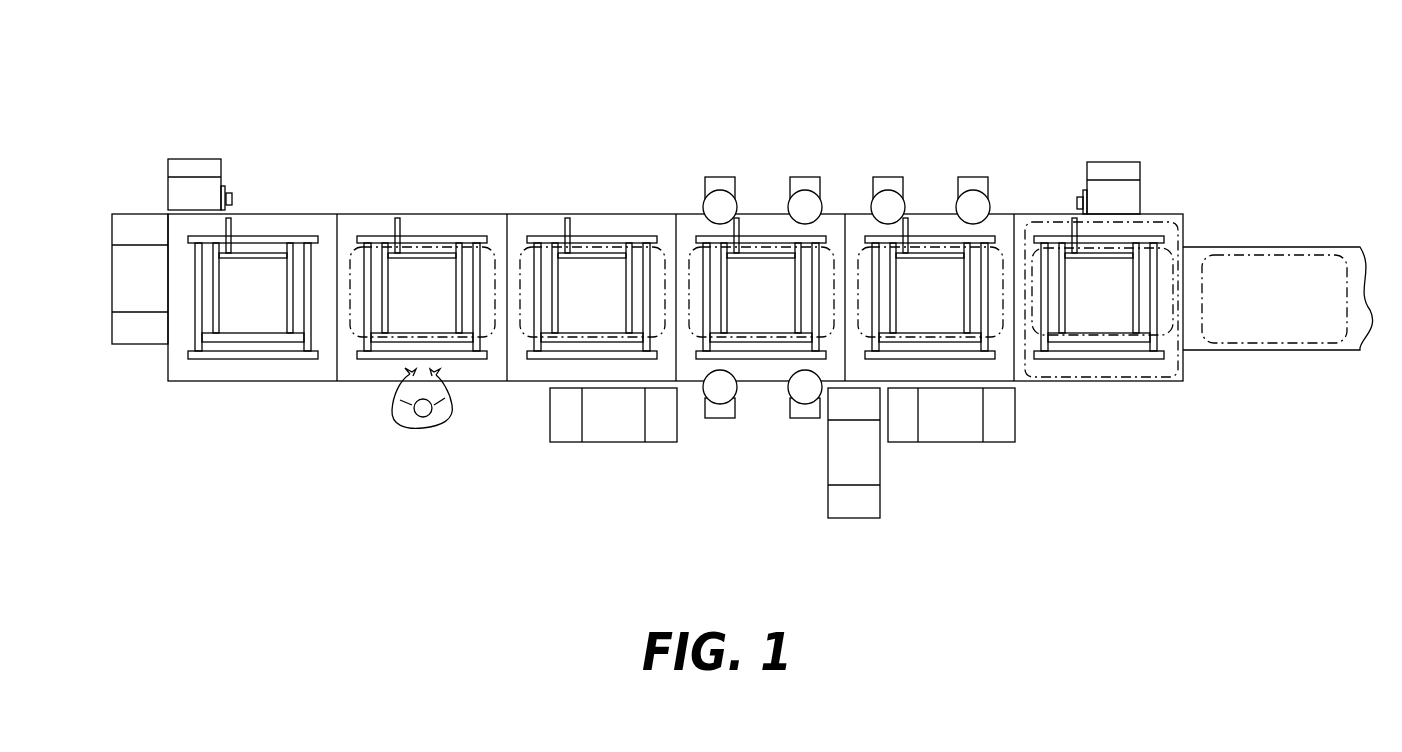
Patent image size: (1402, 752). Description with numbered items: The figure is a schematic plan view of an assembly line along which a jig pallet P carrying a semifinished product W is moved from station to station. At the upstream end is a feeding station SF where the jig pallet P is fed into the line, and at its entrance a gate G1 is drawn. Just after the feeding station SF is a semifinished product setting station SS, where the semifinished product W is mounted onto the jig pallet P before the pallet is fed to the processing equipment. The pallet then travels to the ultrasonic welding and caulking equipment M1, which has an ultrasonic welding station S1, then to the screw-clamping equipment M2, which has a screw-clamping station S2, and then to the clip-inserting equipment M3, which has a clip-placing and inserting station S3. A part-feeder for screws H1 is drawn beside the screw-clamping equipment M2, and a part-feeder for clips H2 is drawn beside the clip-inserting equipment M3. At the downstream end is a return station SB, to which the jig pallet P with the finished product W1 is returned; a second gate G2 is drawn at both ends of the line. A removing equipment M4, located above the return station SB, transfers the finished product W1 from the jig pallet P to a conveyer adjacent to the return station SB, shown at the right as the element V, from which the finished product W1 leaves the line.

The first gate G1 is at (210, 222).
The second gate G2 is at (203, 175).
The feeding station SF is at (250, 294).
The semifinished product setting station SS is at (418, 294).
The ultrasonic welding station S1 is at (572, 294).
The screw-clamping station S2 is at (755, 294).
The clip-placing and inserting station S3 is at (930, 294).
The return station SB is at (1083, 284).
The ultrasonic welding and caulking equipment M1 is at (551, 211).
The screw-clamping equipment M2 is at (746, 211).
The clip-inserting equipment M3 is at (926, 211).
The removing equipment M4 is at (1172, 378).
The part-feeder for screws H1 is at (715, 210).
The part-feeder for clips H2 is at (976, 211).
The jig pallet P is at (230, 359).
The semifinished product W is at (353, 333).
The finished product W1 is at (1255, 230).
The transport vehicle V is at (1355, 338).